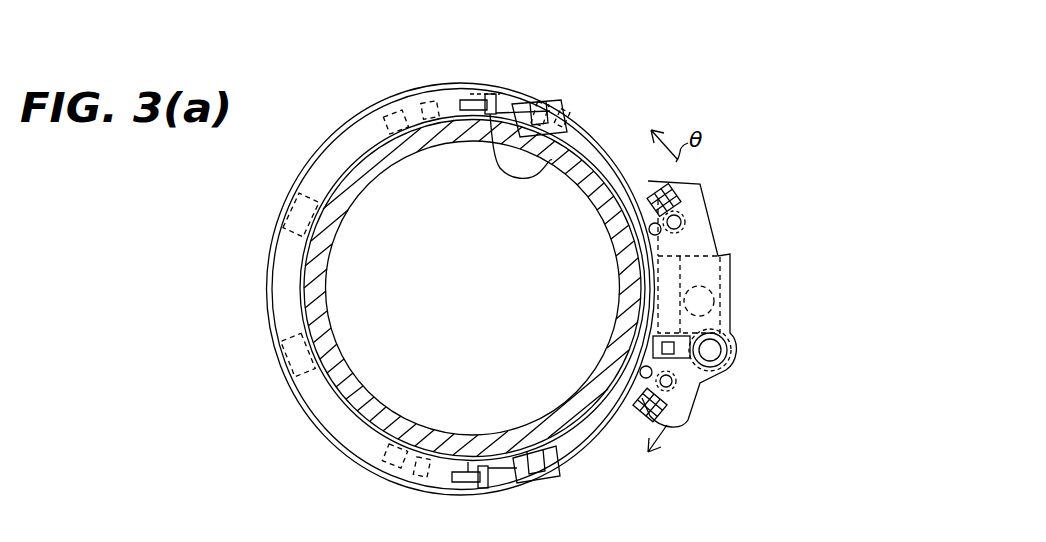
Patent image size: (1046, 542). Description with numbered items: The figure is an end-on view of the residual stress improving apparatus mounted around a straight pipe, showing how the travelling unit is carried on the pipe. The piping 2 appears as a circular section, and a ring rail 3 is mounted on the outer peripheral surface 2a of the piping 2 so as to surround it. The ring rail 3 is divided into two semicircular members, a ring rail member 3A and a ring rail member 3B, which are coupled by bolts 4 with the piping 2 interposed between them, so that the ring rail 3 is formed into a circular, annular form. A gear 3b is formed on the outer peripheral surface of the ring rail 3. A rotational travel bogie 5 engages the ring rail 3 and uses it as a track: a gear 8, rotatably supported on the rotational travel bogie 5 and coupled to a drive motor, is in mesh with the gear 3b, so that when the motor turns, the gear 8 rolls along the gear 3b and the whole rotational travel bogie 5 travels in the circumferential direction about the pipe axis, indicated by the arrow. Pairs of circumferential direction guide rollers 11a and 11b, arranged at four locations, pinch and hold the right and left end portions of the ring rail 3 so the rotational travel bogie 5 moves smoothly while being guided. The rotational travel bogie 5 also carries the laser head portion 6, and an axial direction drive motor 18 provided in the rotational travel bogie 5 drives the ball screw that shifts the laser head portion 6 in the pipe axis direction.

The piping 2 is at (305, 392).
The outer peripheral surface of the piping 2a is at (300, 294).
The ring rail 3 is at (517, 41).
The ring rail member 3A is at (546, 80).
The ring rail member 3B is at (413, 80).
The gear 3b is at (618, 134).
The bolts 4 is at (568, 138).
The rotational travel bogie 5 is at (682, 445).
The laser head portion 6 is at (731, 262).
The gear 8 is at (720, 252).
The circumferential direction guide rollers 11a is at (672, 218).
The circumferential direction guide rollers 11b is at (690, 203).
The axial direction drive motor 18 is at (729, 357).